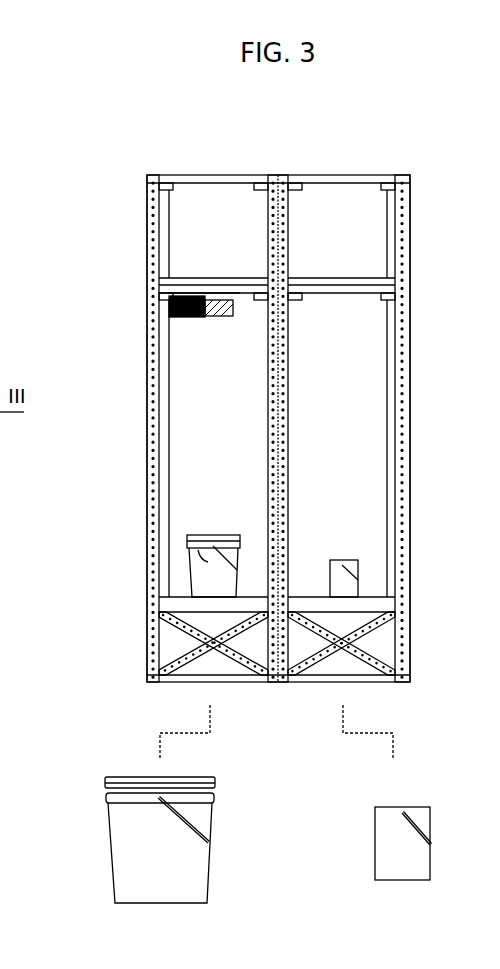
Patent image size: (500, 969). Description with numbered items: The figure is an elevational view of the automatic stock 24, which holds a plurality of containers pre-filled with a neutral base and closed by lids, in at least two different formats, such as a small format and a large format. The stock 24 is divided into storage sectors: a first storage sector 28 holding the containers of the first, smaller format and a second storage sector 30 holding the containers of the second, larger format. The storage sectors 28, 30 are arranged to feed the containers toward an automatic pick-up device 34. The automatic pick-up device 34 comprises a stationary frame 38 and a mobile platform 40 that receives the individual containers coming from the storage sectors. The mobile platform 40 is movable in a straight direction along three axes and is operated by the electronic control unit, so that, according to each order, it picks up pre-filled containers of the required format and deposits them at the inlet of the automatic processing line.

The automatic stock 24 is at (422, 127).
The first storage sector 28 is at (222, 160).
The second storage sector 30 is at (317, 165).
The automatic pick-up device 34 is at (435, 230).
The stationary frame 38 is at (410, 388).
The mobile platform 40 is at (193, 318).